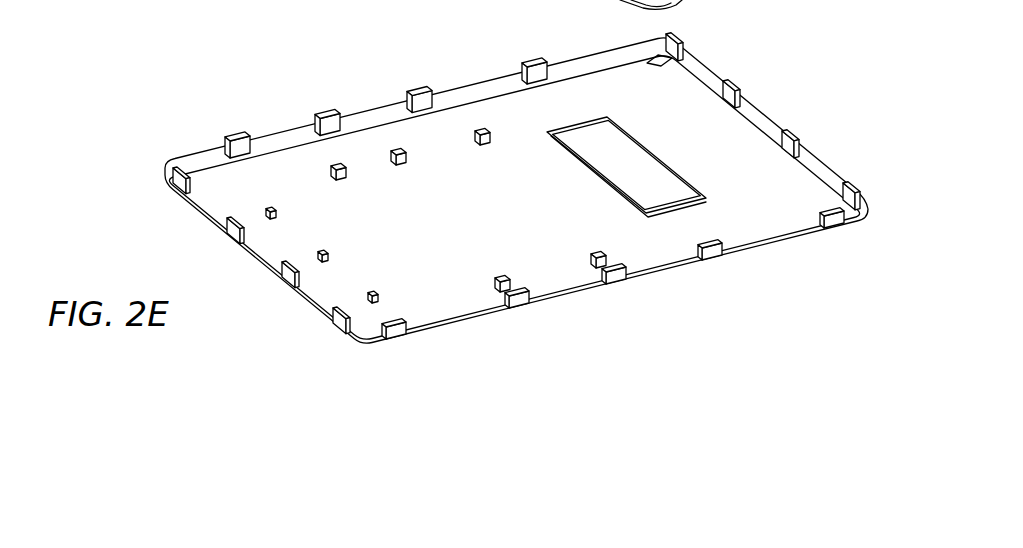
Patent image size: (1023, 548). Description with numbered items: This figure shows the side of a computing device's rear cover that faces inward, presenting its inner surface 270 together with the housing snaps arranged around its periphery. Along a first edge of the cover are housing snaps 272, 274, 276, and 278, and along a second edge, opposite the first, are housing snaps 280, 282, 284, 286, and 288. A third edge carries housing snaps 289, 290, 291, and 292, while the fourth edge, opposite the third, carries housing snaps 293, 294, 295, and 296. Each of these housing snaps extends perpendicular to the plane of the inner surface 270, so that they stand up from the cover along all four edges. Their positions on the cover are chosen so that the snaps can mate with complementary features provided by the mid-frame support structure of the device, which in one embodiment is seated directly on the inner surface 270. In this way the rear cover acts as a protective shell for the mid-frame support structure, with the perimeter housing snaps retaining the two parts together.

The inner surface 270 is at (840, 80).
The housing snap 272 is at (538, 62).
The housing snap 274 is at (420, 92).
The housing snap 276 is at (327, 116).
The housing snap 278 is at (233, 140).
The housing snap 280 is at (834, 221).
The housing snap 282 is at (716, 250).
The housing snap 284 is at (616, 275).
The housing snap 286 is at (518, 299).
The housing snap 288 is at (399, 329).
The housing snap 289 is at (337, 324).
The housing snap 290 is at (289, 276).
The housing snap 291 is at (235, 230).
The housing snap 292 is at (182, 184).
The housing snap 293 is at (679, 38).
The housing snap 294 is at (737, 85).
The housing snap 295 is at (800, 137).
The housing snap 296 is at (858, 192).